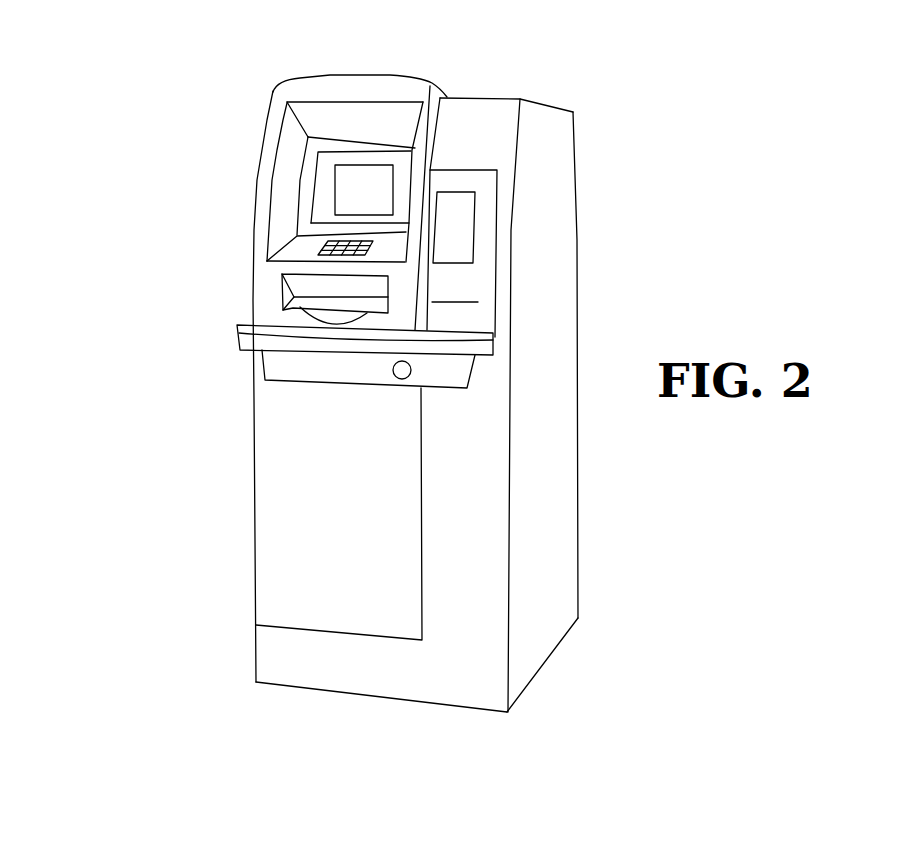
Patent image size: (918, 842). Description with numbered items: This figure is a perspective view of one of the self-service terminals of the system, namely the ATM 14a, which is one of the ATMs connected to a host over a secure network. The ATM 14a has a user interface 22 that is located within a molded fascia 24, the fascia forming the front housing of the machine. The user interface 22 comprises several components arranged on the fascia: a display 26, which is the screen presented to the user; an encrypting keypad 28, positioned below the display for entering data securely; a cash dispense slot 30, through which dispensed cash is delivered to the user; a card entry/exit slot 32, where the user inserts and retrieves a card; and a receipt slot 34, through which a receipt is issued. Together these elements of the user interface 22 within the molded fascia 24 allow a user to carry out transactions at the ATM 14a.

The SST (ATM) 14a is at (575, 153).
The user interface 22 is at (130, 281).
The molded fascia 24 is at (423, 82).
The display 26 is at (378, 202).
The encrypting keypad 28 is at (277, 250).
The cash dispense slot 30 is at (343, 297).
The card entry/exit slot 32 is at (440, 243).
The receipt slot 34 is at (470, 301).